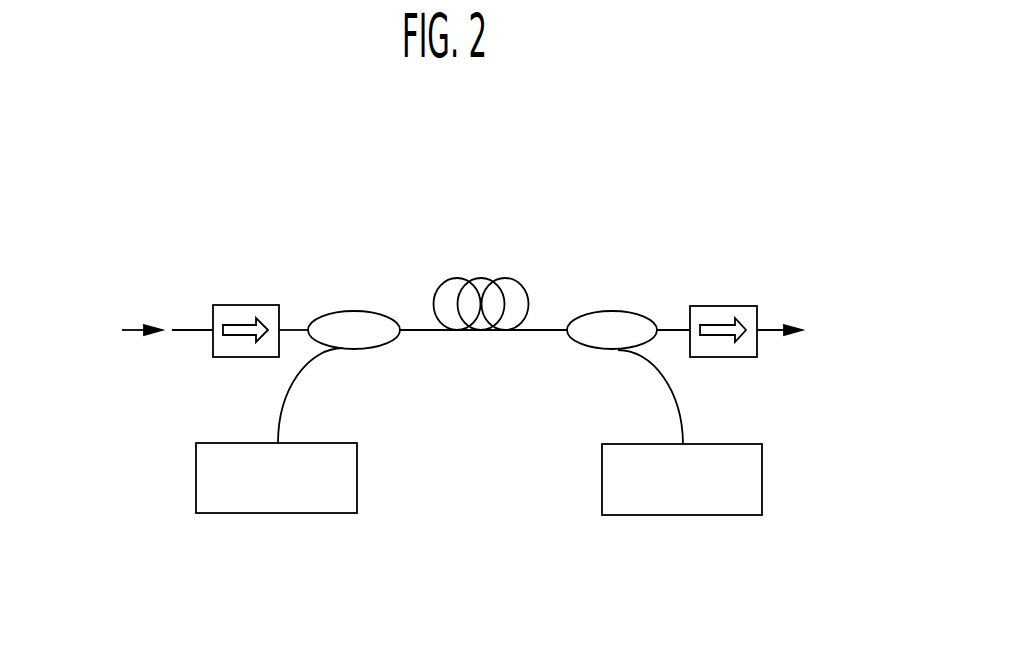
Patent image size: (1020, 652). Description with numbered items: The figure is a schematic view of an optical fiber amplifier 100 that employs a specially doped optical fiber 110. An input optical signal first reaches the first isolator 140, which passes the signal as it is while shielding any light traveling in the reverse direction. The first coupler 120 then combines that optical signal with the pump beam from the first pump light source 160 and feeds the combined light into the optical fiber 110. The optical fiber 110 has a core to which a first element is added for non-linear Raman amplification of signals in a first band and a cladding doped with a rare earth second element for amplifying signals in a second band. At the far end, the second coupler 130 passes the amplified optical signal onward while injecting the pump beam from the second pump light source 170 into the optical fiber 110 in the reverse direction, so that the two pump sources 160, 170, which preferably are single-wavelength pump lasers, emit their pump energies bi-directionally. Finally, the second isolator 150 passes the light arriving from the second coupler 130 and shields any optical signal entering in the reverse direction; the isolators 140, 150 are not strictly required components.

The optical fiber amplifier 100 is at (614, 183).
The optical fiber 110 is at (478, 279).
The first coupler 120 is at (352, 311).
The second coupler 130 is at (612, 312).
The first isolator 140 is at (245, 305).
The second isolator 150 is at (723, 306).
The first pump light source 160 is at (291, 513).
The second pump light source 170 is at (689, 515).